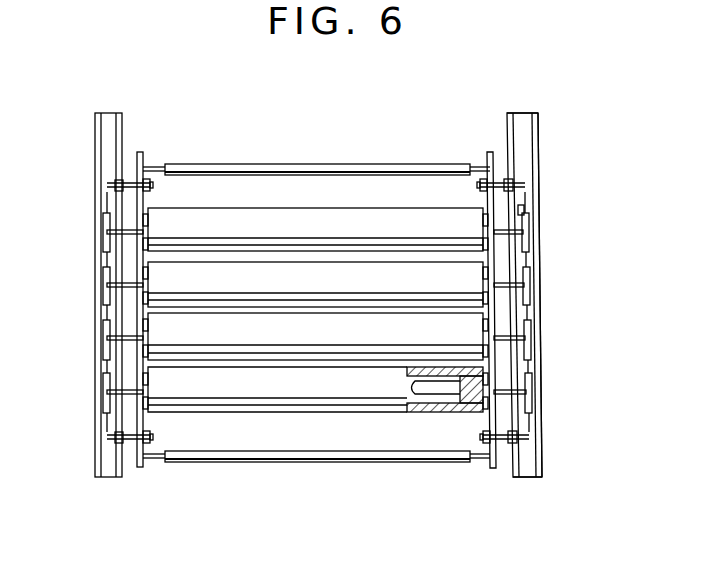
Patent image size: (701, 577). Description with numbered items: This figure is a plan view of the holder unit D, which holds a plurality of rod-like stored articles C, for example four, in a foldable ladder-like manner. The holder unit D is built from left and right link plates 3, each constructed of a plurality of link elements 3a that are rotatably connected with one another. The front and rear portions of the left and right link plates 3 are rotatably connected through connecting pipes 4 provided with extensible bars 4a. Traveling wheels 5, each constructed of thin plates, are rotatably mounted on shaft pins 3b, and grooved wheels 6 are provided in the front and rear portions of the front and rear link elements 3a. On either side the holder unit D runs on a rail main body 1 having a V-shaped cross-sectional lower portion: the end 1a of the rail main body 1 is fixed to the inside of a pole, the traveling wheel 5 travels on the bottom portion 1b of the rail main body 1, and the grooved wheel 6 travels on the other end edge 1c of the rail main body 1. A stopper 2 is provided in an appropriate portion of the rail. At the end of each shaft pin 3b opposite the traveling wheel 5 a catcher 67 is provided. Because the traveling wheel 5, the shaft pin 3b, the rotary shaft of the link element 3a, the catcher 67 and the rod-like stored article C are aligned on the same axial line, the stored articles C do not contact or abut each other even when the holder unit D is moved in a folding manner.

The rail main body 1 is at (512, 118).
The end of the rail main body 1a is at (540, 150).
The bottom portion of the rail main body 1b is at (525, 470).
The other end edge of the rail main body 1c is at (508, 135).
The stopper 2 is at (530, 213).
The link plate 3 is at (140, 152).
The link element 3a is at (148, 268).
The shaft pin 3b is at (128, 390).
The connecting pipe 4 is at (362, 164).
The extensible bar 4a is at (163, 167).
The traveling wheel 5 is at (107, 295).
The grooved wheel 6 is at (113, 186).
The catcher 67 is at (470, 378).
The rod-like stored article C is at (318, 333).
The holder unit D is at (287, 468).